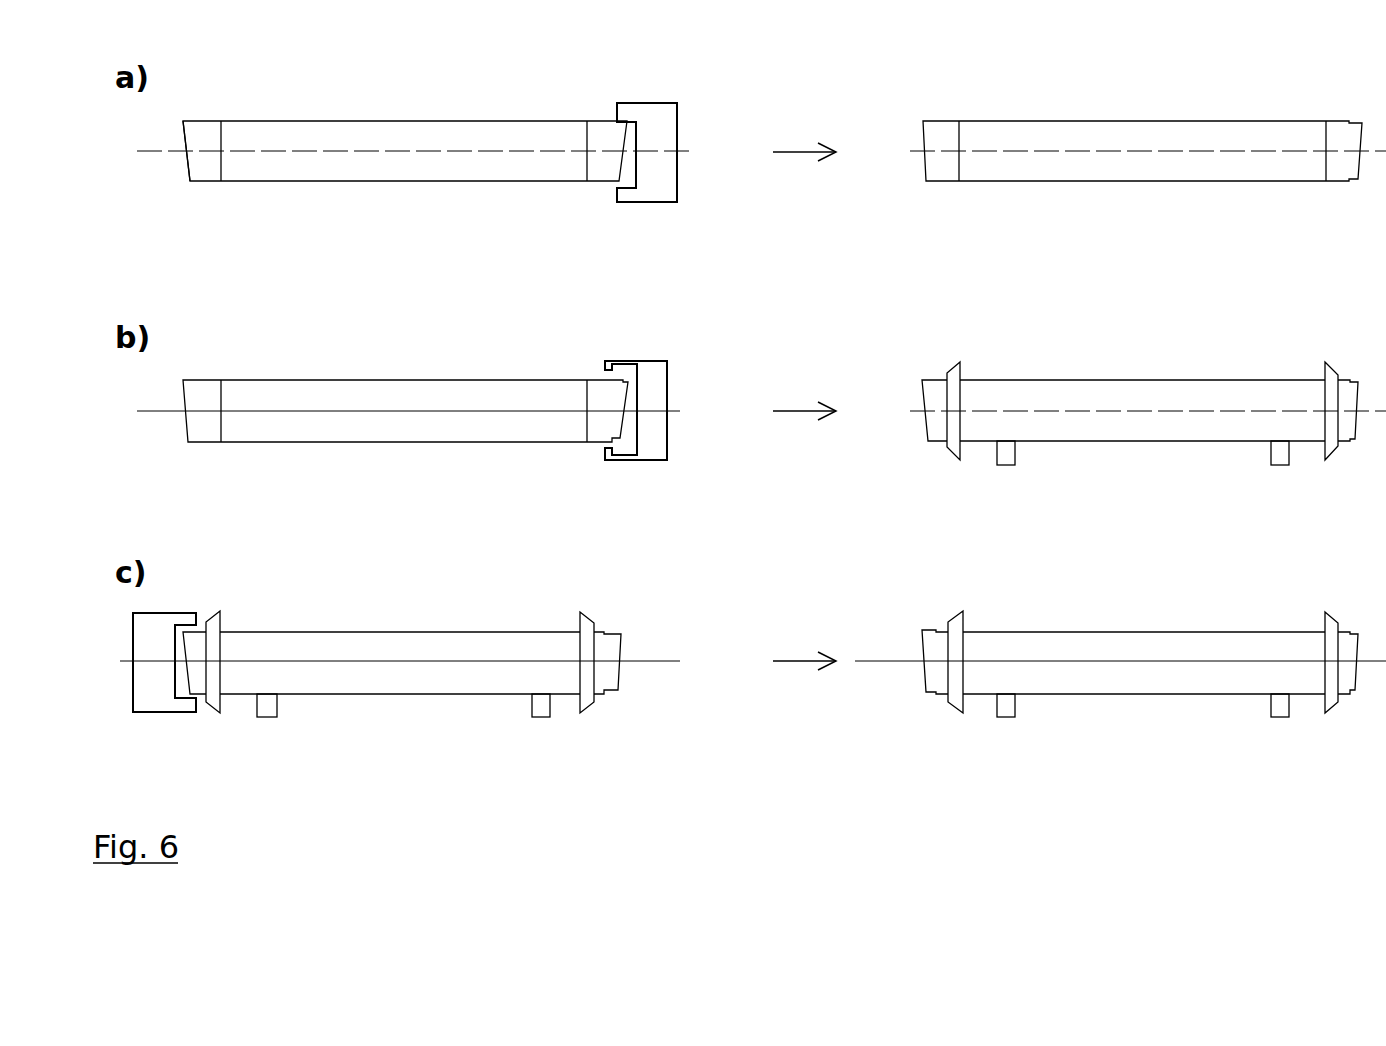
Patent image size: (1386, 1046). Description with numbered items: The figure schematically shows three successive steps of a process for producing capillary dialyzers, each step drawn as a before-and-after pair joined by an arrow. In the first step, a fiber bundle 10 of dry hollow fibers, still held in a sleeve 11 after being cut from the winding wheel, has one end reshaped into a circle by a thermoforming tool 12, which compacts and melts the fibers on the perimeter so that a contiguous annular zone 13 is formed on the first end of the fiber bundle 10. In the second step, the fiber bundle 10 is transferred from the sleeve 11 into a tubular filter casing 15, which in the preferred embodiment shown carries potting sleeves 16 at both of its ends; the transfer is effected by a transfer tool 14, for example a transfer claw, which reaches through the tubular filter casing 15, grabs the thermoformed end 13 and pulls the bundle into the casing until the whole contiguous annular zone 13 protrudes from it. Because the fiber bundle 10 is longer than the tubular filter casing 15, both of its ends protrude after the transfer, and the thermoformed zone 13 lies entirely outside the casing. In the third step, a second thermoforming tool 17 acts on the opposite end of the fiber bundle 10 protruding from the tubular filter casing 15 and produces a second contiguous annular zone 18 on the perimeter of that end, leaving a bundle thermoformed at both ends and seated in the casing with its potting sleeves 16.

The fiber bundle 10 is at (182, 167).
The sleeve 11 is at (411, 191).
The thermoforming tool 12 is at (648, 208).
The contiguous annular zone 13 is at (1356, 190).
The transfer tool 14 is at (647, 472).
The tubular filter casing 15 is at (1140, 452).
The potting sleeve 16 is at (951, 472).
The thermoforming tool 17 is at (162, 719).
The contiguous annular zone 18 is at (931, 700).